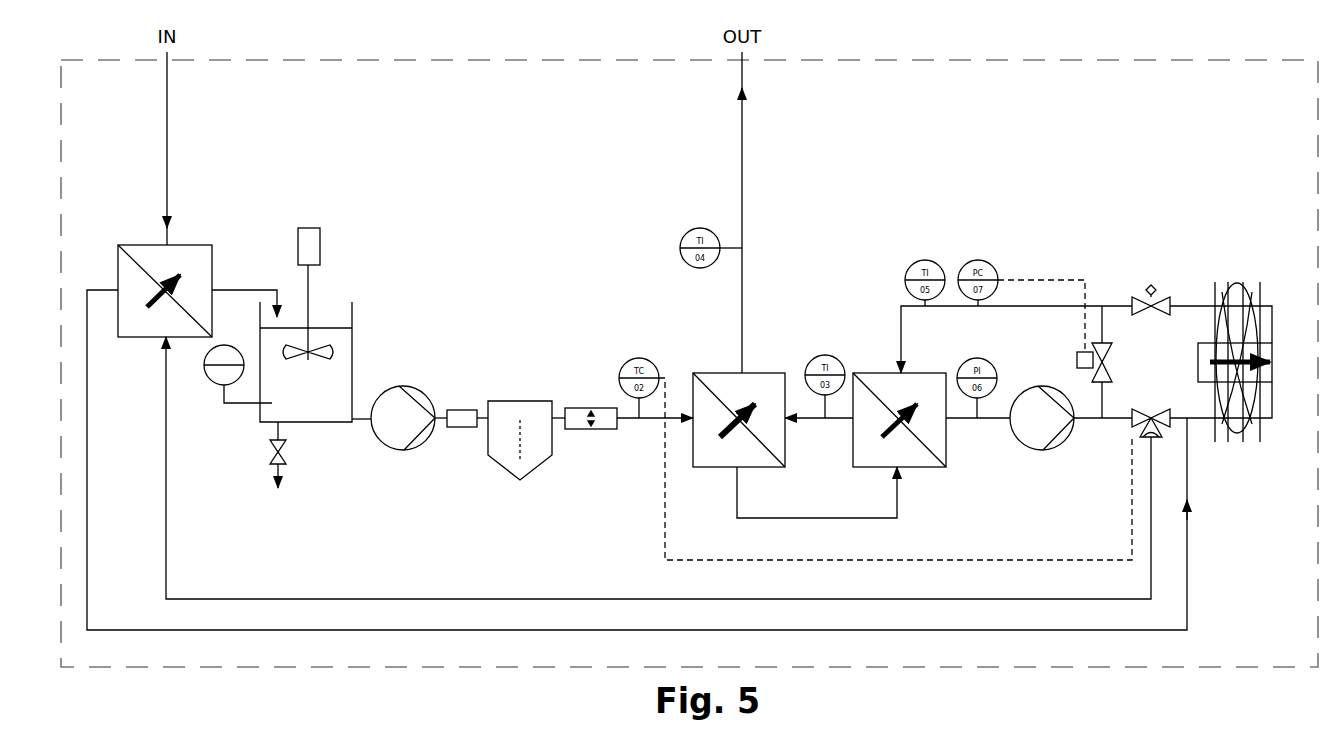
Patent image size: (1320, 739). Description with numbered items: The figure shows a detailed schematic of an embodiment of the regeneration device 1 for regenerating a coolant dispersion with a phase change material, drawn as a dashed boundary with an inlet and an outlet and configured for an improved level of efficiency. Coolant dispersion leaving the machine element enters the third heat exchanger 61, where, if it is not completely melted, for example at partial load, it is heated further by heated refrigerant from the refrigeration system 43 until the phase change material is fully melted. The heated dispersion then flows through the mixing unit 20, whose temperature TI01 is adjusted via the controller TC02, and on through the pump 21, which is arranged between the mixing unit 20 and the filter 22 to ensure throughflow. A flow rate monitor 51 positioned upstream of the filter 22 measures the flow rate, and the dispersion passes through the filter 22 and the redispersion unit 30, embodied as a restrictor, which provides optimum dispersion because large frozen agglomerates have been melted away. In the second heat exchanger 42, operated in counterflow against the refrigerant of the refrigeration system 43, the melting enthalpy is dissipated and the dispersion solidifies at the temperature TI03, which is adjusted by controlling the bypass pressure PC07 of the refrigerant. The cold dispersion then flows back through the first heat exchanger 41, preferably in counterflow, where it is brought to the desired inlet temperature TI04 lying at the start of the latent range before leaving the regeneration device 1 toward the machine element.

The regeneration device 1 is at (689, 363).
The mixing unit 20 is at (289, 280).
The pump 21 is at (400, 380).
The filter 22 is at (522, 397).
The redispersion unit 30 is at (594, 405).
The first heat exchanger 41 is at (752, 370).
The second heat exchanger 42 is at (894, 370).
The refrigeration system 43 is at (1098, 275).
The flow rate monitor 51 is at (463, 405).
The third heat exchanger 61 is at (160, 241).